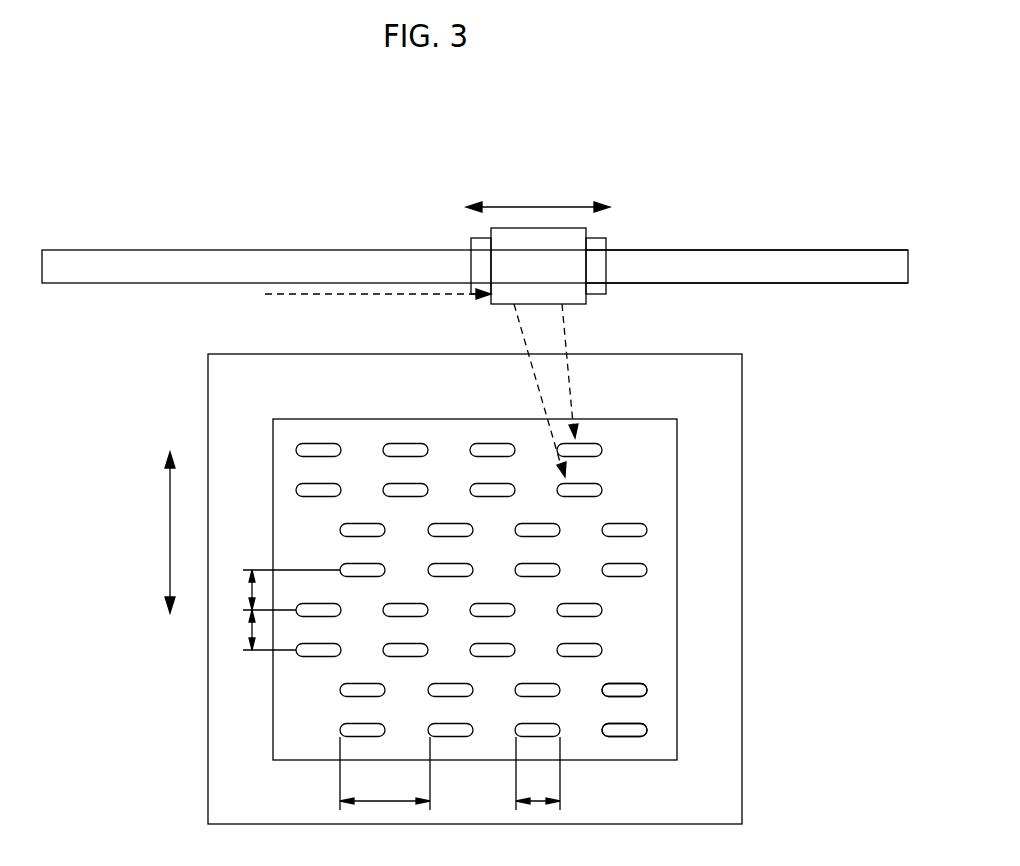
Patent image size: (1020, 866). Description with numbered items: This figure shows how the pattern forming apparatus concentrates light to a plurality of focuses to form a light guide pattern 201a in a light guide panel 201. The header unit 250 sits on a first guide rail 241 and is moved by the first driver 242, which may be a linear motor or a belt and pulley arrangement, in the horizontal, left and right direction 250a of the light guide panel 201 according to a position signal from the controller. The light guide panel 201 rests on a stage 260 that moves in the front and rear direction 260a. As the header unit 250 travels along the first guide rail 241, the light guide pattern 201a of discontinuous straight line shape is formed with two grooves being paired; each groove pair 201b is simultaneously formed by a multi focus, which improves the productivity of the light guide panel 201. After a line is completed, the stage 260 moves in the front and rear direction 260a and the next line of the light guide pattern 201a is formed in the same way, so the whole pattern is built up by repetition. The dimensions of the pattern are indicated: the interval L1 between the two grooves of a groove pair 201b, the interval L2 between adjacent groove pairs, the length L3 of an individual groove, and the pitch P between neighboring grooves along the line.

The first guide rail 241 is at (145, 250).
The first driver 242 is at (607, 265).
The header unit 250 is at (503, 268).
The horizontal direction 250a is at (538, 207).
The stage 260 is at (742, 418).
The front and rear direction 260a is at (170, 530).
The light guide panel 201 is at (677, 542).
The light guide pattern 201a is at (407, 443).
The groove pair 201b is at (647, 690).
The interval between grooves of a groove pair L1 is at (256, 630).
The interval between groove pairs L2 is at (278, 590).
The pitch between grooves P is at (385, 773).
The length of a groove L3 is at (538, 773).